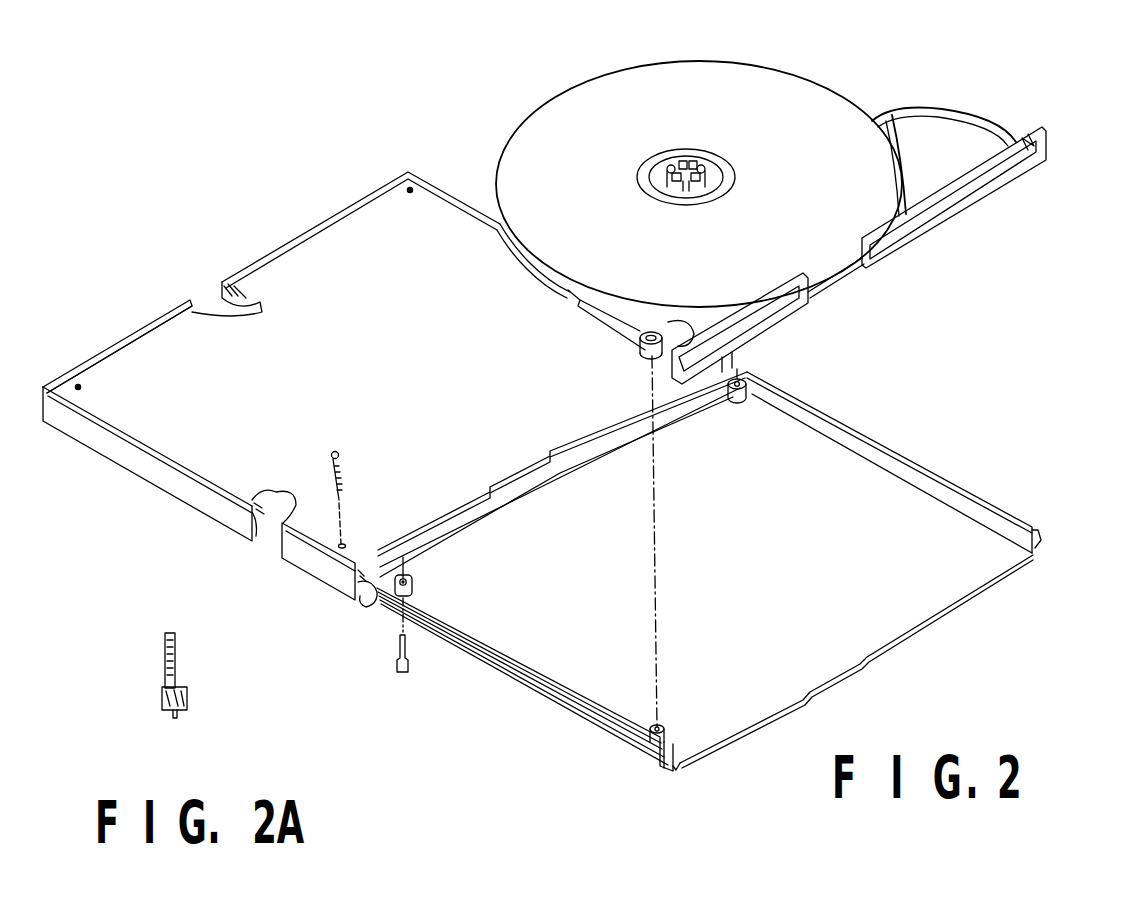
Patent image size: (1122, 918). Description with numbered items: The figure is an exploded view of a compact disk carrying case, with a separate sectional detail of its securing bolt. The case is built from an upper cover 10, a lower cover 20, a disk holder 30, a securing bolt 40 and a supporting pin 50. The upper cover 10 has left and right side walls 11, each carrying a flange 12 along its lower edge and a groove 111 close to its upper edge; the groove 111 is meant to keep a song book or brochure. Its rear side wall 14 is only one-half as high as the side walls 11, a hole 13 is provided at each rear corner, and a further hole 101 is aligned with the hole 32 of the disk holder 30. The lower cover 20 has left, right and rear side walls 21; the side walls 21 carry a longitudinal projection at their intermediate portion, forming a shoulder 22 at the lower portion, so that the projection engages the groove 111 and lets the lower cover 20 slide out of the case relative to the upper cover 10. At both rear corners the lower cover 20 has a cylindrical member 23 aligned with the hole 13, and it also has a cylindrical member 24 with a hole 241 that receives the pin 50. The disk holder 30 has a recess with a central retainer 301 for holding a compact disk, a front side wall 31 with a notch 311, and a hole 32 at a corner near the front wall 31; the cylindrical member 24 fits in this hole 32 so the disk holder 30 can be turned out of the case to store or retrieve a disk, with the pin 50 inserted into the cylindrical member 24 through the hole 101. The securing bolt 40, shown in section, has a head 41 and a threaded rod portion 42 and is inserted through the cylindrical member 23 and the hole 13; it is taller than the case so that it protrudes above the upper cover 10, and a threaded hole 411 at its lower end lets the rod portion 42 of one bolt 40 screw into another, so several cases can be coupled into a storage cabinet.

In FIG. 2, the upper cover 10 is at (317, 232).
In FIG. 2, the left side and right side walls 11 is at (746, 358).
In FIG. 2, the flange 12 is at (258, 540).
In FIG. 2, the hole 13 is at (410, 187).
In FIG. 2, the rear side wall 14 is at (220, 293).
In FIG. 2, the lower cover 20 is at (939, 622).
In FIG. 2, the left side, right side and rear side walls 21 is at (883, 448).
In FIG. 2, the shoulder 22 is at (1043, 540).
In FIG. 2, the cylindrical member 23 is at (748, 390).
In FIG. 2, the cylindrical member 24 is at (676, 746).
In FIG. 2, the disk holder 30 is at (822, 116).
In FIG. 2, the front side wall 31 is at (985, 192).
In FIG. 2, the hole 32 is at (655, 332).
In FIG. 2, the securing bolt 40 is at (402, 675).
In FIG. 2A, the securing bolt 40 is at (182, 681).
In FIG. 2A, the head 41 is at (163, 706).
In FIG. 2A, the threaded rod portion 42 is at (164, 655).
In FIG. 2, the supporting pin 50 is at (346, 461).
In FIG. 2, the hole 101 is at (346, 542).
In FIG. 2, the groove 111 is at (270, 503).
In FIG. 2, the hole 241 is at (663, 724).
In FIG. 2, the retainer 301 is at (672, 165).
In FIG. 2, the notch 311 is at (851, 266).
In FIG. 2A, the threaded hole 411 is at (176, 719).